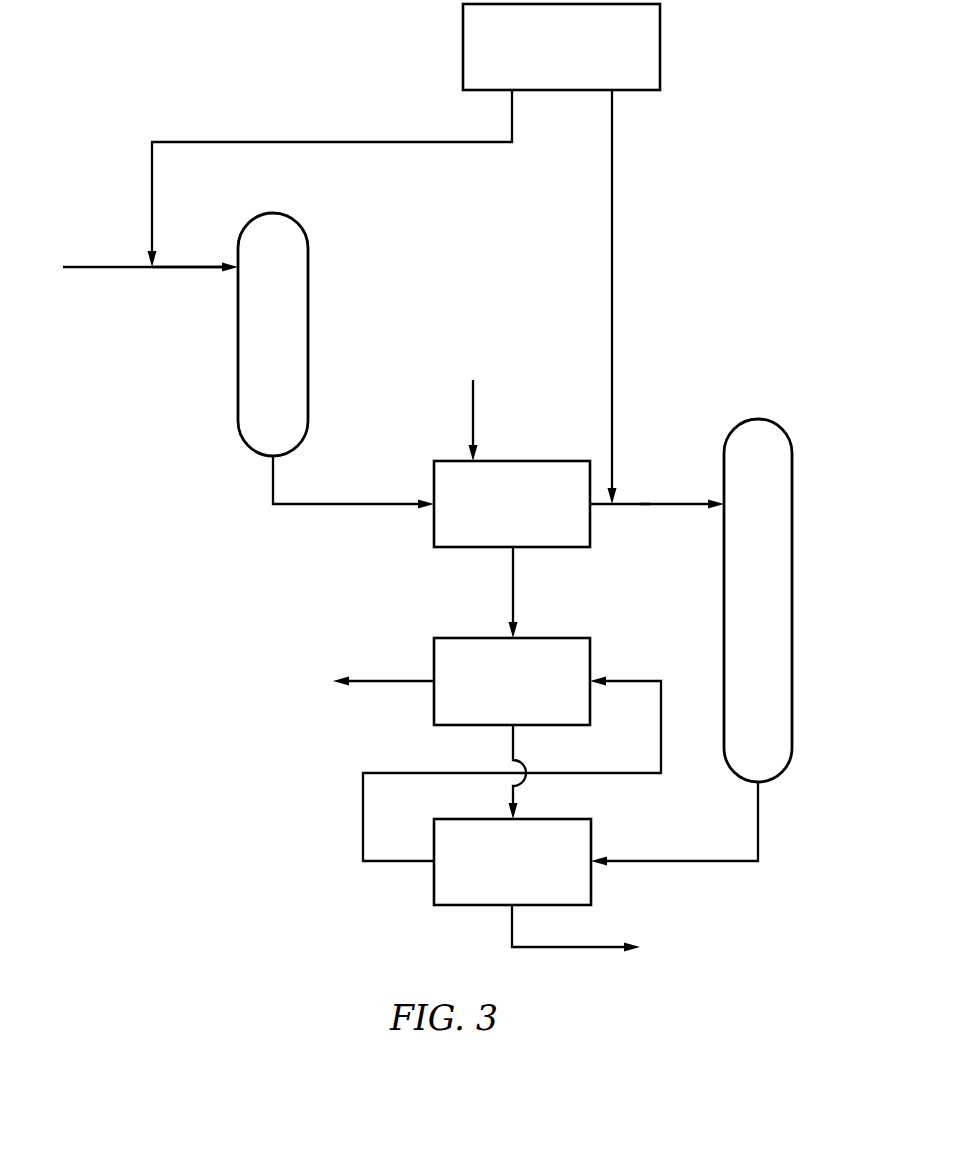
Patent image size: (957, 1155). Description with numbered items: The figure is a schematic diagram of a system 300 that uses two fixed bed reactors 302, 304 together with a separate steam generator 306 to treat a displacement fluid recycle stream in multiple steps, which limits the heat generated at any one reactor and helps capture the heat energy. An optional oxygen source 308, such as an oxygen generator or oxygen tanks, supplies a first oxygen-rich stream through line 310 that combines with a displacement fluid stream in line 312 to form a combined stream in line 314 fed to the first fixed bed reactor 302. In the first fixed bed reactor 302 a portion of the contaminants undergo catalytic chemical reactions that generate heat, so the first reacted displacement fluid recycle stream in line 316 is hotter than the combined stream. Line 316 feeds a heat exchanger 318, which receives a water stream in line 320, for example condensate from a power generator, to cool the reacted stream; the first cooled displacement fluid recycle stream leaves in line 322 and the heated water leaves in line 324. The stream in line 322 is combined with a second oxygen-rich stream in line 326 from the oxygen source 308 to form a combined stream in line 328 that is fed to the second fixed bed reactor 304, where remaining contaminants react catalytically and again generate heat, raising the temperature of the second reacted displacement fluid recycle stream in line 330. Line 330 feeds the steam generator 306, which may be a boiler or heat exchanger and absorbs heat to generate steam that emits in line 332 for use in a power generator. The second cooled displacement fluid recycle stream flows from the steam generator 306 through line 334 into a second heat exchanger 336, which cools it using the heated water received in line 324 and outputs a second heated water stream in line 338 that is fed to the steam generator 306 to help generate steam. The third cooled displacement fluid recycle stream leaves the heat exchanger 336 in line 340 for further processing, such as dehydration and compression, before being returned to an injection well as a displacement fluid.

The system 300 is at (198, 865).
The first fixed bed reactor 302 is at (311, 226).
The second fixed bed reactor 304 is at (790, 432).
The steam generator 306 is at (462, 905).
The oxygen source 308 is at (661, 37).
The line 310 is at (250, 142).
The line 312 is at (100, 267).
The line 314 is at (196, 267).
The line 316 is at (332, 504).
The heat exchanger 318 is at (460, 547).
The line 320 is at (472, 400).
The line 322 is at (600, 505).
The line 324 is at (514, 583).
The line 326 is at (614, 249).
The line 328 is at (645, 504).
The line 330 is at (760, 813).
The line 332 is at (560, 947).
The line 334 is at (572, 773).
The heat exchanger 336 is at (472, 725).
The line 338 is at (515, 743).
The line 340 is at (395, 681).